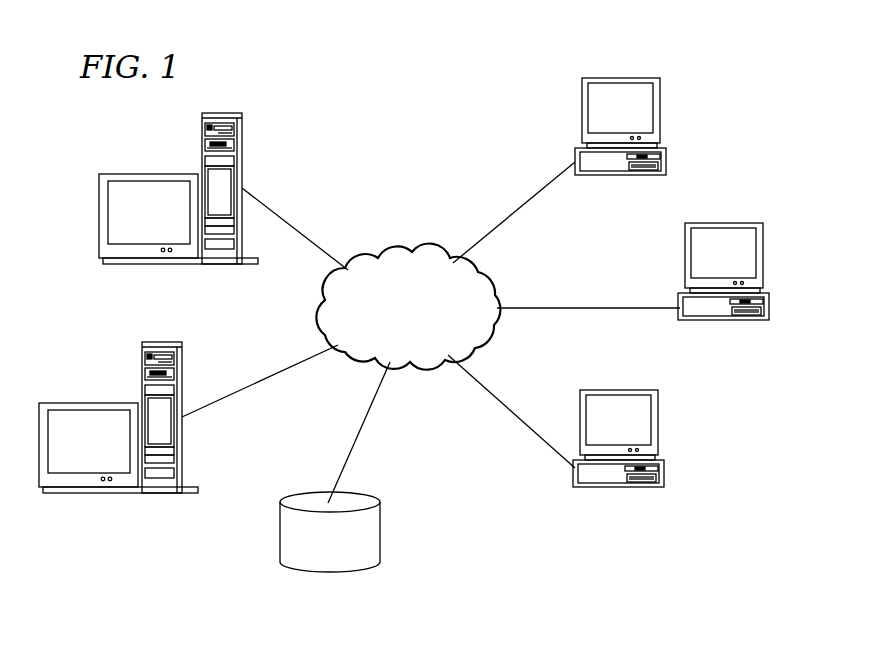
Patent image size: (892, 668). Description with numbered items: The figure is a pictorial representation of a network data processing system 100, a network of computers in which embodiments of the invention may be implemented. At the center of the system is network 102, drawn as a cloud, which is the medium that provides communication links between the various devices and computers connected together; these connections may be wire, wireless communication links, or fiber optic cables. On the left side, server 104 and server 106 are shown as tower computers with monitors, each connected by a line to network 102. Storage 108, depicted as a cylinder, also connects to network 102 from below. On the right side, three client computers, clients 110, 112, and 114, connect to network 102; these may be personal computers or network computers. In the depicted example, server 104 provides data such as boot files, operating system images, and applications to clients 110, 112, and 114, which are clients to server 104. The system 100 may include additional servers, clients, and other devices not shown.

The network data processing system 100 is at (321, 115).
The network 102 is at (427, 337).
The server 104 is at (142, 363).
The server 106 is at (203, 137).
The storage 108 is at (280, 530).
The client 110 is at (660, 120).
The client 112 is at (767, 262).
The client 114 is at (660, 430).